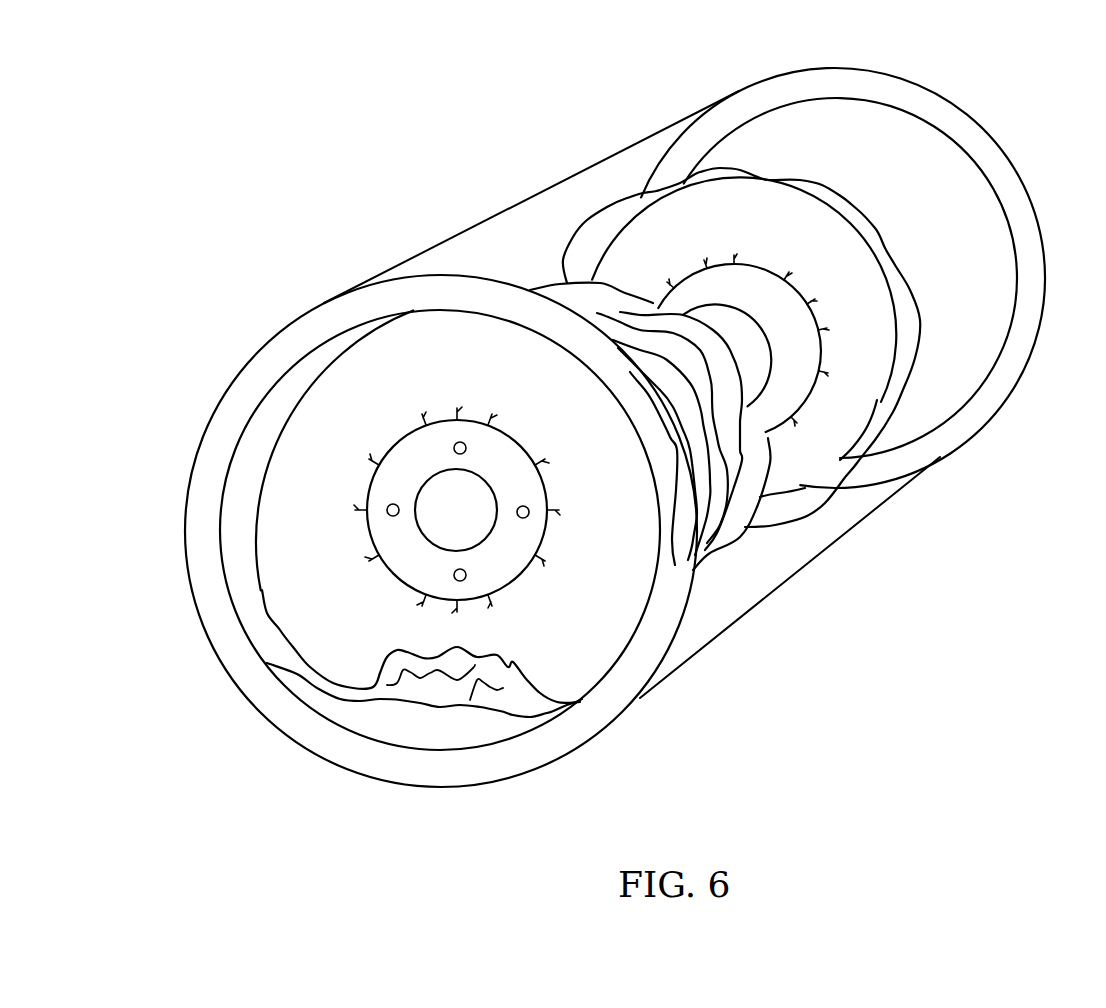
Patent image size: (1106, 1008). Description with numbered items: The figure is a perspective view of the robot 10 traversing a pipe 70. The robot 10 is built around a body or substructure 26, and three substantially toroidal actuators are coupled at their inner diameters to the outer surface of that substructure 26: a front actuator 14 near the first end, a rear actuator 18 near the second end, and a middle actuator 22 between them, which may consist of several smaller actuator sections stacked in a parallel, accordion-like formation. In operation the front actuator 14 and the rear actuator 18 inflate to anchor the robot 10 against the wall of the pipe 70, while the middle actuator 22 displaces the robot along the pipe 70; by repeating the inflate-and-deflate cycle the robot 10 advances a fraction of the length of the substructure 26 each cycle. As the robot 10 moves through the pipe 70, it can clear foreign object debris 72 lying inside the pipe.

The robot 10 is at (962, 237).
The front actuator 14 is at (332, 513).
The rear actuator 18 is at (683, 243).
The middle actuator 22 is at (750, 535).
The substructure 26 is at (738, 335).
The pipe 70 is at (777, 90).
The foreign object debris 72 is at (450, 688).